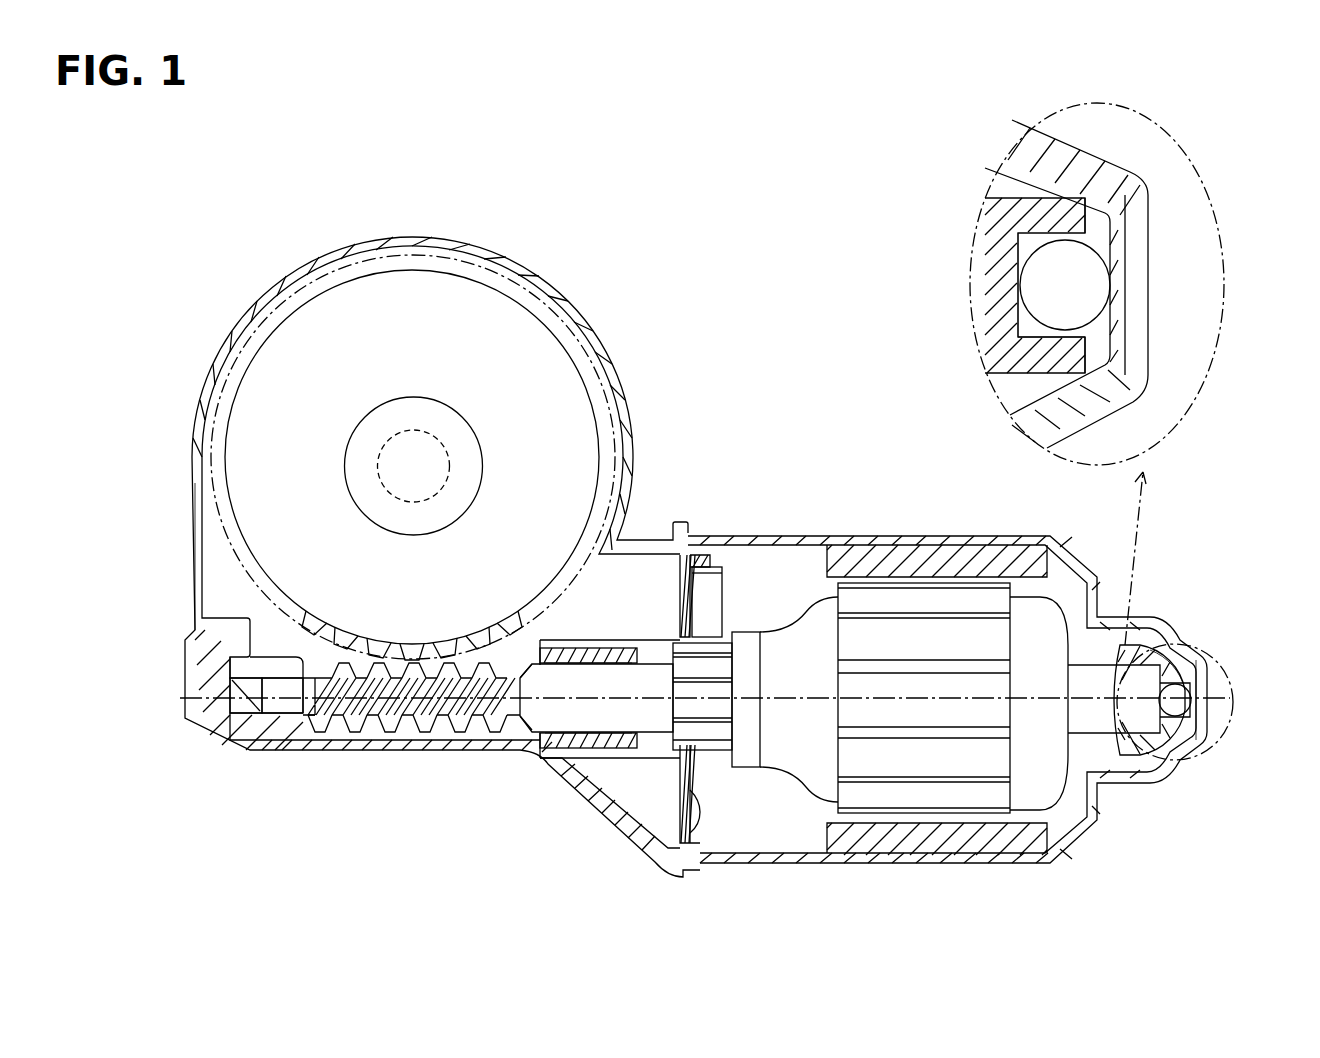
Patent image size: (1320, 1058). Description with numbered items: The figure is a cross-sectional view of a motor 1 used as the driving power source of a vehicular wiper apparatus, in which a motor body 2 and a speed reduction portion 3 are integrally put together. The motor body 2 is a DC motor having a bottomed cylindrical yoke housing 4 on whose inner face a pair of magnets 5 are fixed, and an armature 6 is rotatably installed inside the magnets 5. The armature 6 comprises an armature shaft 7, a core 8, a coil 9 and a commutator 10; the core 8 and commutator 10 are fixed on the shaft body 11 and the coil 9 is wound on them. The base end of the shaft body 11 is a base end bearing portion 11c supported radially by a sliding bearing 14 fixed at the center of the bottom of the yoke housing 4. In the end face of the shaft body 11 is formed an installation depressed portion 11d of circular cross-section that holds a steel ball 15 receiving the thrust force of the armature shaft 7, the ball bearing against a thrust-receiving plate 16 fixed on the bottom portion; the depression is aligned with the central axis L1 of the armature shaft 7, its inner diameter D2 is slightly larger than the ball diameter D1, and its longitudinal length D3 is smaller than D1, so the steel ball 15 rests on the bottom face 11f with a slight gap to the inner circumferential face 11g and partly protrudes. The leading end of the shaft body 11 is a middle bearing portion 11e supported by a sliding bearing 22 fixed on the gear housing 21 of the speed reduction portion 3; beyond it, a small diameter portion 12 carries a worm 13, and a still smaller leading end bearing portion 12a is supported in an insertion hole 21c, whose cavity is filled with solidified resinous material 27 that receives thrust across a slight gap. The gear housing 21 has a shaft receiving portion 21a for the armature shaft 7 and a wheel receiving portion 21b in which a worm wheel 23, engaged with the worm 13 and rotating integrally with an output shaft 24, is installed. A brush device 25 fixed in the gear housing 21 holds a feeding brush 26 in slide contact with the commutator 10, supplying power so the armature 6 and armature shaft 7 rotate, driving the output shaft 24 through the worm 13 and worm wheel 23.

The motor 1 is at (256, 243).
The motor body 2 is at (1074, 527).
The speed reduction portion 3 is at (592, 312).
The yoke housing 4 is at (768, 540).
The magnets 5 is at (875, 545).
The armature 6 is at (1072, 600).
The armature shaft 7 is at (655, 665).
The core 8 is at (938, 600).
The coil 9 is at (810, 785).
The commutator 10 is at (715, 730).
The shaft body 11 is at (660, 748).
The base end bearing portion 11c is at (1170, 765).
The installation depressed portion 11d is at (1215, 673).
The middle bearing portion 11e is at (595, 743).
The bottom face 11f is at (1028, 266).
The inner circumferential face 11g is at (1028, 333).
The small diameter portion 12 is at (515, 739).
The leading end bearing portion 12a is at (290, 713).
The worm 13 is at (400, 722).
The sliding bearing 14 is at (1183, 628).
The steel ball 15 is at (1195, 701).
The thrust-receiving plate 16 is at (1200, 638).
The gear housing 21 is at (628, 436).
The shaft receiving portion 21a is at (440, 740).
The wheel receiving portion 21b is at (208, 452).
The insertion hole 21c is at (278, 712).
The sliding bearing 22 is at (585, 770).
The worm wheel 23 is at (573, 385).
The output shaft 24 is at (482, 473).
The brush device 25 is at (692, 555).
The feeding brush 26 is at (722, 600).
The resinous material 27 is at (240, 690).
The diameter of the steel ball D1 is at (1098, 290).
The inner diameter of the installation depressed portion D2 is at (1008, 325).
The longitudinal length of the installation depressed portion D3 is at (1073, 357).
The central axis of the armature shaft L1 is at (780, 695).